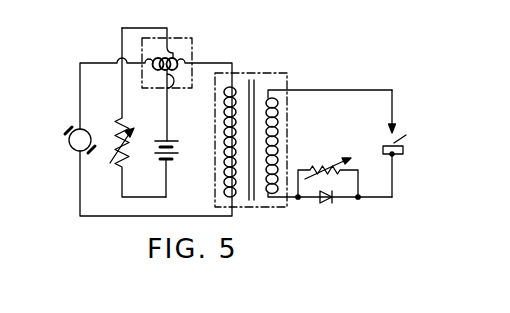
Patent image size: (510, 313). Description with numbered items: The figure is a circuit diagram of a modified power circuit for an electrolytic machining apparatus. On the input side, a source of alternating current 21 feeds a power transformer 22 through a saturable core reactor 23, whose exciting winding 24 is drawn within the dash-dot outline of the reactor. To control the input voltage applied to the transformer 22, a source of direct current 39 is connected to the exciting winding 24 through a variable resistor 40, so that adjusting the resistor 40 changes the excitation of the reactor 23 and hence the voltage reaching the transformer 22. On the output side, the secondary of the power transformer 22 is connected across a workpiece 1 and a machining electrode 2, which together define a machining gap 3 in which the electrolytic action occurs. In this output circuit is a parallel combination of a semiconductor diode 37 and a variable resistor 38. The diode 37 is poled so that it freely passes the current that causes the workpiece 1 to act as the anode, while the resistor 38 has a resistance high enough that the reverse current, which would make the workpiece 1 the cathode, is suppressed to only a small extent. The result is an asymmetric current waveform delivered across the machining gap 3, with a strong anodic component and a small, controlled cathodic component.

The machining workpiece 1 is at (403, 150).
The machining electrode 2 is at (388, 126).
The machining gap 3 is at (407, 136).
The source of alternating current 21 is at (69, 140).
The power transformer 22 is at (279, 65).
The saturable core reactor 23 is at (198, 34).
The exciting winding 24 is at (160, 84).
The semiconductor diode 37 is at (328, 210).
The variable resistor 38 is at (328, 169).
The source of direct current 39 is at (175, 169).
The variable resistor 40 is at (129, 112).